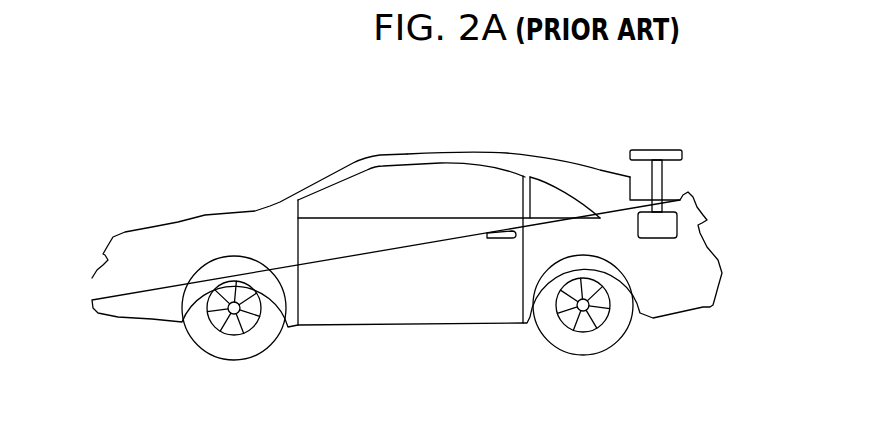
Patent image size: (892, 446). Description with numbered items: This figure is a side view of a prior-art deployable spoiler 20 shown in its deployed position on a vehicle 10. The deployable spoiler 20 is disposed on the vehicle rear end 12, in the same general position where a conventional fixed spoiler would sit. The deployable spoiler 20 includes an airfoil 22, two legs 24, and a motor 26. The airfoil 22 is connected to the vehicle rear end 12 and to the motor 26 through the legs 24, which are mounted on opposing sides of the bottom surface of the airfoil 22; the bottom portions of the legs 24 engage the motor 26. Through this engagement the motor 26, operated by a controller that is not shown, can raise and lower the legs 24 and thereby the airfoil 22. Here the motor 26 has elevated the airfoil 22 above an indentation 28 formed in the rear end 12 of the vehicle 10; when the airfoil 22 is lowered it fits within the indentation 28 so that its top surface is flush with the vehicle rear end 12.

The vehicle 10 is at (411, 214).
The vehicle rear end 12 is at (541, 139).
The deployable spoiler 20 is at (666, 163).
The airfoil 22 is at (643, 151).
The legs 24 is at (652, 177).
The motor 26 is at (665, 234).
The indentation 28 is at (676, 185).